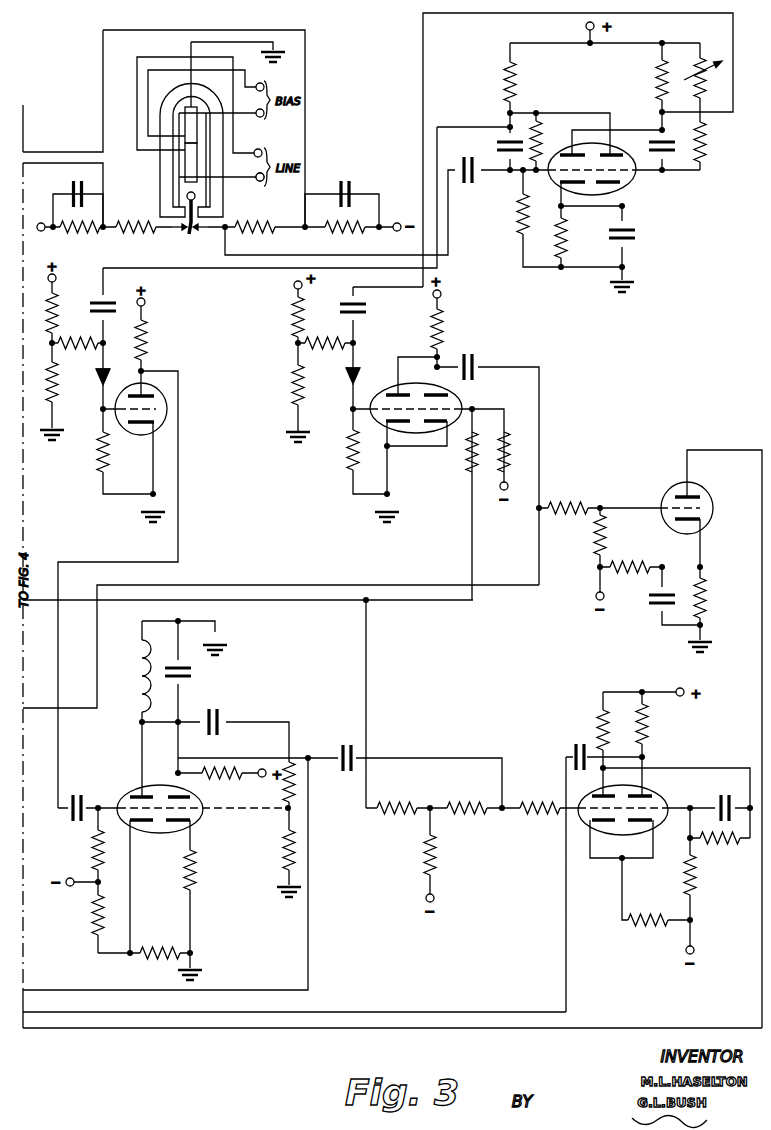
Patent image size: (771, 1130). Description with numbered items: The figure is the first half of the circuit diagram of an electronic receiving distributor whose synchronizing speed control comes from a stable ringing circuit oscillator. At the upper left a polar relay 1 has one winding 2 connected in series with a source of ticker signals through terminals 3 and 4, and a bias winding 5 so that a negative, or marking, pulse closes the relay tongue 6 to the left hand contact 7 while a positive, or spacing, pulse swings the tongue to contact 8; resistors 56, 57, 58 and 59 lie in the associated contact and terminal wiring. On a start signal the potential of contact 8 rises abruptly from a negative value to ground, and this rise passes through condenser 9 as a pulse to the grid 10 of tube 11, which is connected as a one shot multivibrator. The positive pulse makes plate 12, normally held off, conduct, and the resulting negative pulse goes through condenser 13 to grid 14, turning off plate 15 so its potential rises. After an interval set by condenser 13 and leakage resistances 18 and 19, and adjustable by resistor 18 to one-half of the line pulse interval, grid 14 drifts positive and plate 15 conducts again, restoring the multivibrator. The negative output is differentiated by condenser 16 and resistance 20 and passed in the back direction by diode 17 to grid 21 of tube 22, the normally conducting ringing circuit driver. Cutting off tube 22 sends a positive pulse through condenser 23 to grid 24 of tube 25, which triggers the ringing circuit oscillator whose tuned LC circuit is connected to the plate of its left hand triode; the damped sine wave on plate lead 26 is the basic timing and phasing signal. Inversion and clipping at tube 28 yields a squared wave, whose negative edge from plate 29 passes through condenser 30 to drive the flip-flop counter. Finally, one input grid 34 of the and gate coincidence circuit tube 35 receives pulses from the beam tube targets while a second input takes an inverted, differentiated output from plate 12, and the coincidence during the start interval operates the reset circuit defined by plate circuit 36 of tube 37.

The polar relay 1 is at (226, 204).
The winding 2 is at (184, 160).
The terminal 3 is at (256, 176).
The terminal 4 is at (256, 152).
The bias winding 5 is at (185, 112).
The relay tongue 6 is at (189, 236).
The left hand contact 7 is at (178, 232).
The contact 8 is at (205, 232).
The condenser 9 is at (472, 154).
The grid 10 is at (534, 175).
The tube 11 is at (565, 147).
The plate 12 is at (580, 148).
The condenser 13 is at (666, 143).
The grid 14 is at (644, 174).
The plate 15 is at (620, 148).
The condenser 16 is at (105, 304).
The diode 17 is at (105, 370).
The resistor 18 is at (704, 80).
The leakage resistance 19 is at (704, 132).
The resistance 20 is at (72, 350).
The grid 21 is at (119, 395).
The tube 22 is at (128, 436).
The condenser 23 is at (83, 793).
The grid 24 is at (114, 799).
The tube 25 is at (110, 826).
The plate lead 26 is at (176, 774).
The tube 28 is at (579, 828).
The plate 29 is at (655, 790).
The condenser 30 is at (578, 738).
The input grid 34 is at (474, 406).
The and gate coincidence circuit tube 35 is at (445, 437).
The plate circuit 36 is at (699, 490).
The tube 37 is at (715, 518).
The resistor 56 is at (73, 236).
The resistor 57 is at (129, 236).
The resistor 58 is at (254, 236).
The resistor 59 is at (343, 236).